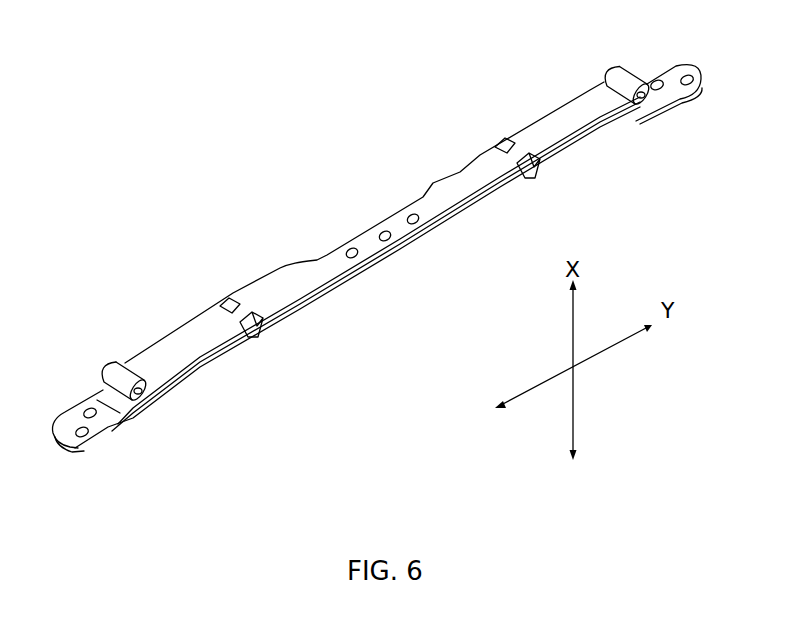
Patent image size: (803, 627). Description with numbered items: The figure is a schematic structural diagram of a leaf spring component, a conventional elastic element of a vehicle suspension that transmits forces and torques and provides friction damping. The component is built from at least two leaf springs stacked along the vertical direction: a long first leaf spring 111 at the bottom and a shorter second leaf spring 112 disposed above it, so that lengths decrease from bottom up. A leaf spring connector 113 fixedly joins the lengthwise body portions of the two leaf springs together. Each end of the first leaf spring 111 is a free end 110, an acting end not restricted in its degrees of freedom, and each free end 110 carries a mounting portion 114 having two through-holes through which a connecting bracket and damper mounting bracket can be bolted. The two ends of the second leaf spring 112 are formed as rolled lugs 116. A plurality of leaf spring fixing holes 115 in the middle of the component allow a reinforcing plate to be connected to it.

The free end 110 is at (83, 360).
The first leaf spring 111 is at (462, 172).
The second leaf spring 112 is at (503, 198).
The leaf spring connector 113 is at (273, 327).
The mounting portion 114 is at (97, 442).
The leaf spring fixing hole 115 is at (410, 240).
The rolled lug 116 is at (607, 72).